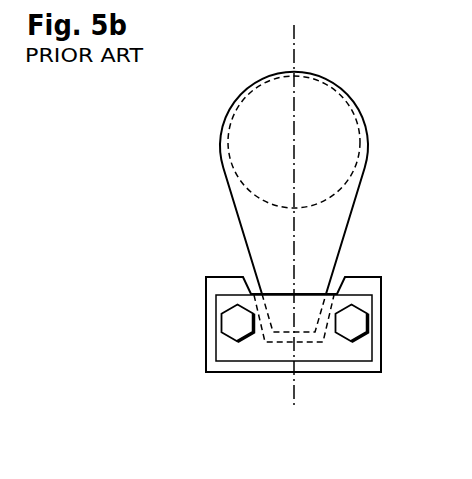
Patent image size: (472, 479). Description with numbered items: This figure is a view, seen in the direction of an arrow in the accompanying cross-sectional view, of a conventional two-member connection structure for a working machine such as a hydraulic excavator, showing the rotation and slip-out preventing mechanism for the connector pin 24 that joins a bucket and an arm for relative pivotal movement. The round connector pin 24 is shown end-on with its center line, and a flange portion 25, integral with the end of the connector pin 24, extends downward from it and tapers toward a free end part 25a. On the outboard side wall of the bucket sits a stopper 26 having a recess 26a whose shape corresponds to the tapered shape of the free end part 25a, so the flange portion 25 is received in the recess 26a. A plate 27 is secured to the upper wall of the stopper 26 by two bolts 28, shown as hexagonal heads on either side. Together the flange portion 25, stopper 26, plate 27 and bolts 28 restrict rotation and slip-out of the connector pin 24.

The connector pin 24 is at (318, 120).
The flange portion 25 is at (356, 197).
The free end part 25a is at (307, 307).
The stopper 26 is at (220, 277).
The recess 26a is at (252, 294).
The plate 27 is at (250, 352).
The bolts 28 is at (222, 321).